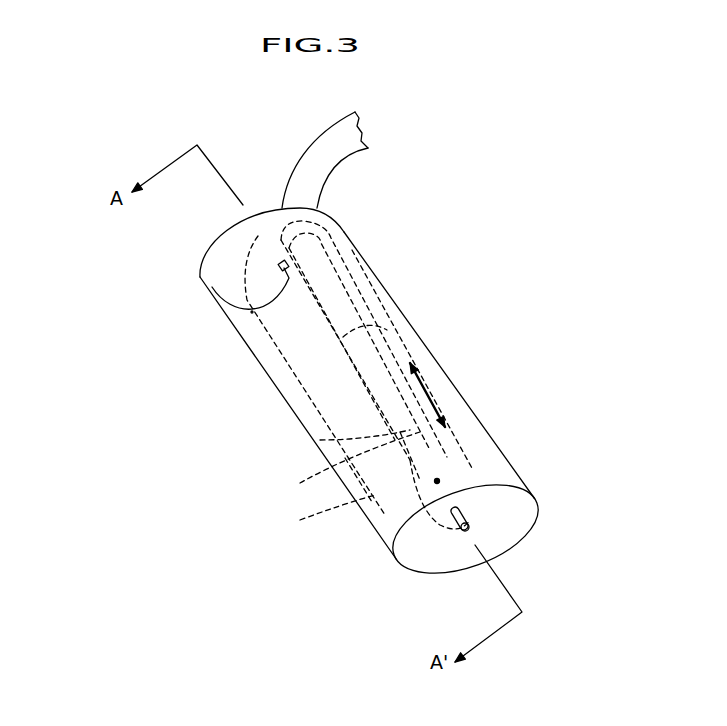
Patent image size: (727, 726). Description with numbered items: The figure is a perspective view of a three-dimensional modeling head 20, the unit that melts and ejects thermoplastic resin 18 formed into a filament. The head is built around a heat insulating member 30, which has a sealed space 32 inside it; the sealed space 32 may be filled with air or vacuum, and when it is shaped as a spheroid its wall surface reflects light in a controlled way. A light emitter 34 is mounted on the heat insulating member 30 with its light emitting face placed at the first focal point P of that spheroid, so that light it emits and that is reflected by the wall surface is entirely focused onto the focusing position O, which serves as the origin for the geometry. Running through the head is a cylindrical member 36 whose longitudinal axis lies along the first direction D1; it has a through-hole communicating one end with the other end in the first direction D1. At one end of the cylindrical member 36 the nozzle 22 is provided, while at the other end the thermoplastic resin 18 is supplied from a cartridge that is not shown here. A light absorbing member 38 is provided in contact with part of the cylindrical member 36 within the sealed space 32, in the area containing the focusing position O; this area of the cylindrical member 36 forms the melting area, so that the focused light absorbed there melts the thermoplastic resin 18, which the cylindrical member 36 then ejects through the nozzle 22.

The thermoplastic resin 18 is at (313, 146).
The three-dimensional modeling head 20 is at (490, 122).
The nozzle 22 is at (461, 533).
The heat insulating member 30 is at (227, 287).
The sealed space 32 is at (285, 398).
The light emitter 34 is at (279, 262).
The cylindrical member 36 is at (340, 471).
The light absorbing member 38 is at (357, 503).
The first focal point P is at (252, 312).
The focusing position O is at (437, 482).
The first direction D1 is at (432, 388).